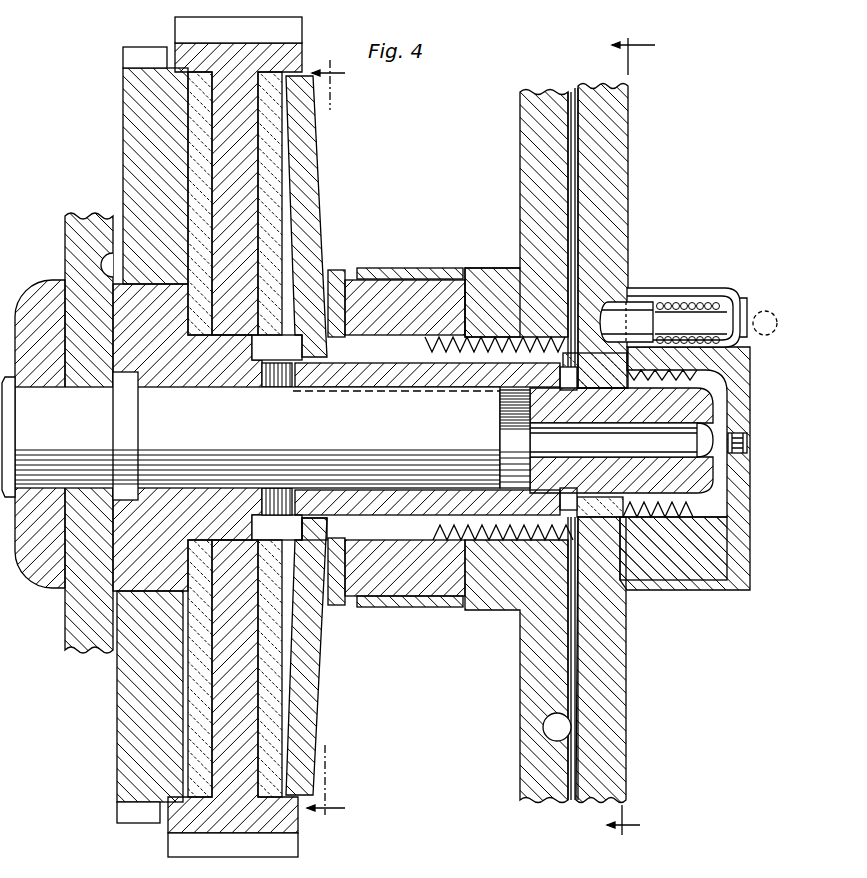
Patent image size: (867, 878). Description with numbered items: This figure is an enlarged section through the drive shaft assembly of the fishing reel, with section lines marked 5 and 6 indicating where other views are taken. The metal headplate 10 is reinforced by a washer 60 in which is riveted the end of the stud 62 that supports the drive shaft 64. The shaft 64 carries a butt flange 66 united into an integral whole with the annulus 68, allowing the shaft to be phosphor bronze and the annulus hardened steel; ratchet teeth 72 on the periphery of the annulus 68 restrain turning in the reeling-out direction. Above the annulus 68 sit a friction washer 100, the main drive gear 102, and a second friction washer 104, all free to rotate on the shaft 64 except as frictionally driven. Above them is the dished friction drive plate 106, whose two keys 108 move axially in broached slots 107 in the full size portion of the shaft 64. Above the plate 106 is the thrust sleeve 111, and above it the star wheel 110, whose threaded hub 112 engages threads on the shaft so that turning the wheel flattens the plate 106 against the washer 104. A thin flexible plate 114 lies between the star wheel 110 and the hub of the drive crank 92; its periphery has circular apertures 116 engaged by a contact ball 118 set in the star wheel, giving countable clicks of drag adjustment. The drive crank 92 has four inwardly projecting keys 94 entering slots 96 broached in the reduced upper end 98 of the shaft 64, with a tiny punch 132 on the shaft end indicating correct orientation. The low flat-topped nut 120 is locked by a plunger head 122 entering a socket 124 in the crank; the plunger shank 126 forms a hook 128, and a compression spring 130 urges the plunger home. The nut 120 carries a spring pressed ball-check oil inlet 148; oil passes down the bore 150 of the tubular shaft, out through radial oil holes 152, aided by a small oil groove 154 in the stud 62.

The headplate 10 is at (83, 610).
The washer 60 is at (33, 292).
The stud 62 is at (85, 440).
The drive shaft 64 is at (373, 364).
The butt flange 66 is at (172, 312).
The annulus 68 is at (147, 720).
The ratchet teeth 72 is at (132, 813).
The drive crank 92 is at (614, 727).
The keys 94 is at (621, 442).
The slots 96 is at (687, 503).
The reduced upper end 98 is at (653, 496).
The friction washer 100 is at (204, 134).
The main drive gear 102 is at (248, 130).
The second friction washer 104 is at (278, 166).
The friction drive plate 106 is at (308, 197).
The broached slots 107 is at (382, 523).
The keys 108 is at (312, 527).
The star wheel 110 is at (540, 158).
The thrust sleeve 111 is at (353, 278).
The threaded hub 112 is at (494, 268).
The thin flexible plate 114 is at (570, 210).
The circular apertures 116 is at (578, 150).
The contact ball 118 is at (556, 727).
The nut 120 is at (720, 582).
The plunger head 122 is at (637, 318).
The socket 124 is at (586, 310).
The shank 126 is at (670, 327).
The hook 128 is at (740, 303).
The compression spring 130 is at (698, 300).
The punch 132 is at (713, 405).
The ball-check oil inlet 148 is at (730, 445).
The bore 150 is at (596, 455).
The radial oil holes 152 is at (280, 388).
The oil groove 154 is at (420, 393).
The section line 5 is at (631, 439).
The section line 6 is at (326, 449).